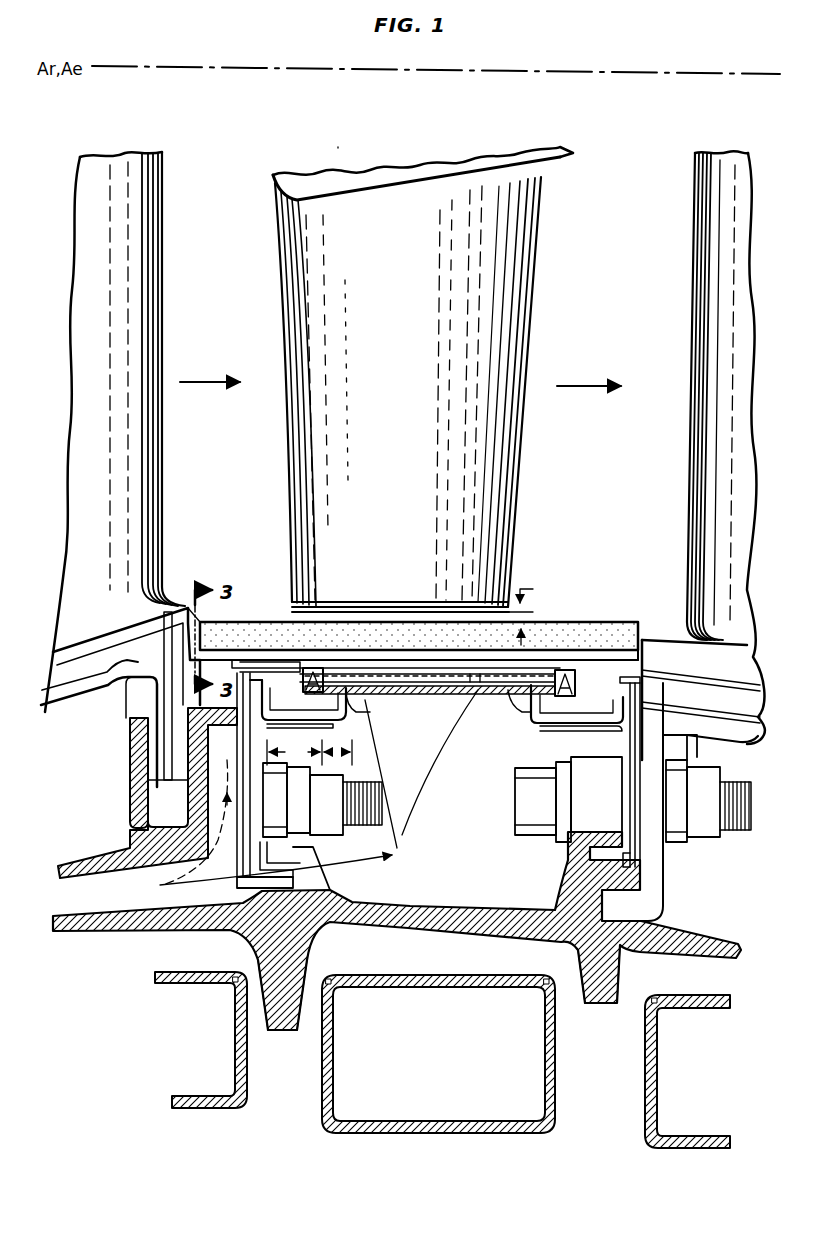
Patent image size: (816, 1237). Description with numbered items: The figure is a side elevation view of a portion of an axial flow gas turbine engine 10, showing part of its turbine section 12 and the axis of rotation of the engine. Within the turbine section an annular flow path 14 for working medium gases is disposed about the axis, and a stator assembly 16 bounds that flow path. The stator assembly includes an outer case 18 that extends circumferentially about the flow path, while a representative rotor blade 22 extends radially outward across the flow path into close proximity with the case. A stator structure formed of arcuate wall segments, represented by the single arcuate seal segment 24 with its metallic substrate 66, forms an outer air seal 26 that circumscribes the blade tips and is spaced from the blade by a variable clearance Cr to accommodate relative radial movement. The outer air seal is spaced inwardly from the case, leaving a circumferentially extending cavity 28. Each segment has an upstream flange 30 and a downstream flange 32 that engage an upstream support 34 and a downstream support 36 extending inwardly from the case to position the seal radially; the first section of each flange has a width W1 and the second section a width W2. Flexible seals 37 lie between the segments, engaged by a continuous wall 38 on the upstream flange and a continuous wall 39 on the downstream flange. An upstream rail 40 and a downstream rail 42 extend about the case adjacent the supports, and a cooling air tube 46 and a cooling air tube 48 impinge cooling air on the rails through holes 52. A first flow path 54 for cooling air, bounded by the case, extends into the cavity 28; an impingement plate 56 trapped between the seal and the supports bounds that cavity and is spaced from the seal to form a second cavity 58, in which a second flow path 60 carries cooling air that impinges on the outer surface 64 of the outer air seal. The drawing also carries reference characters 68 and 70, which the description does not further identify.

The axial flow gas turbine engine 10 is at (122, 978).
The turbine section 12 is at (338, 143).
The annular flow path 14 is at (222, 381).
The stator assembly 16 is at (192, 690).
The outer case 18 is at (88, 914).
The rotor blade 22 is at (408, 509).
The arcuate seal segment 24 is at (629, 619).
The outer air seal 26 is at (594, 597).
The cavity 28 is at (470, 834).
The upstream flange 30 is at (312, 705).
The downstream flange 32 is at (588, 703).
The upstream support 34 is at (257, 785).
The downstream support 36 is at (626, 745).
The flexible seals 37 is at (312, 668).
The continuous wall 38 is at (328, 670).
The continuous wall 39 is at (548, 677).
The upstream rail 40 is at (303, 958).
The downstream rail 42 is at (615, 978).
The cooling air tube 46 is at (240, 1046).
The cooling air tube 48 is at (322, 1055).
The holes 52 is at (238, 974).
The first flow path 54 is at (372, 866).
The impingement plate 56 is at (362, 700).
The second cavity 58 is at (521, 700).
The second flow path 60 is at (362, 676).
The outer surface 64 is at (528, 677).
The metallic substrate 66 is at (476, 680).
The vane platform edge 68 is at (200, 640).
The platform edge 70 is at (638, 627).
The variable clearance Cr is at (529, 614).
The width of the first section W1 is at (338, 752).
The width of the second section W2 is at (294, 752).